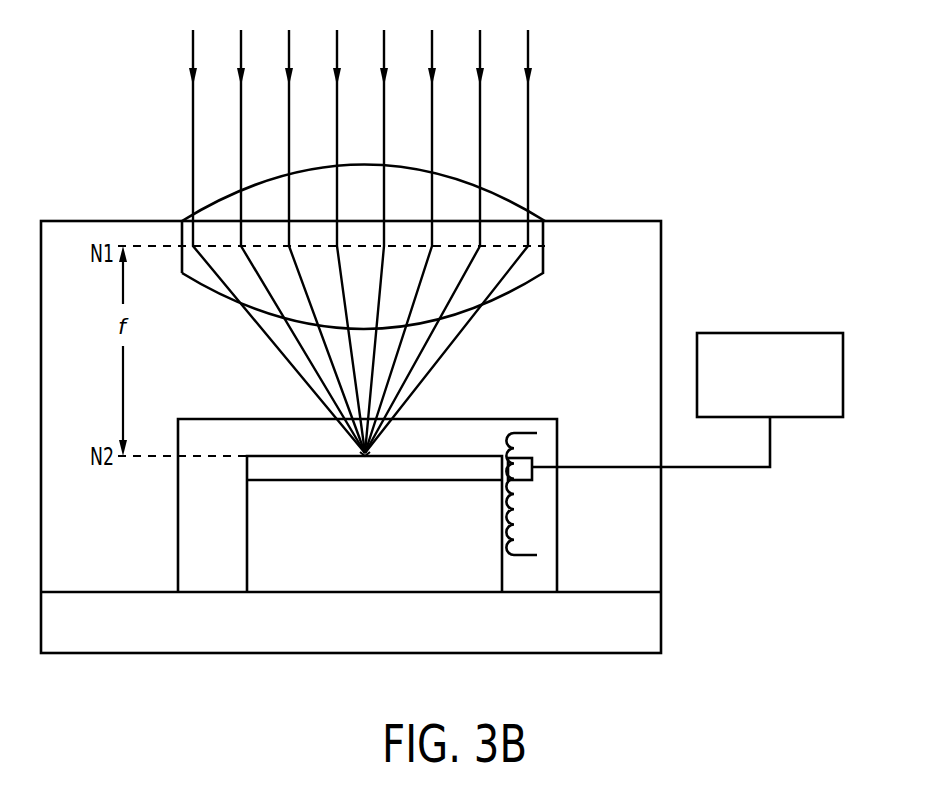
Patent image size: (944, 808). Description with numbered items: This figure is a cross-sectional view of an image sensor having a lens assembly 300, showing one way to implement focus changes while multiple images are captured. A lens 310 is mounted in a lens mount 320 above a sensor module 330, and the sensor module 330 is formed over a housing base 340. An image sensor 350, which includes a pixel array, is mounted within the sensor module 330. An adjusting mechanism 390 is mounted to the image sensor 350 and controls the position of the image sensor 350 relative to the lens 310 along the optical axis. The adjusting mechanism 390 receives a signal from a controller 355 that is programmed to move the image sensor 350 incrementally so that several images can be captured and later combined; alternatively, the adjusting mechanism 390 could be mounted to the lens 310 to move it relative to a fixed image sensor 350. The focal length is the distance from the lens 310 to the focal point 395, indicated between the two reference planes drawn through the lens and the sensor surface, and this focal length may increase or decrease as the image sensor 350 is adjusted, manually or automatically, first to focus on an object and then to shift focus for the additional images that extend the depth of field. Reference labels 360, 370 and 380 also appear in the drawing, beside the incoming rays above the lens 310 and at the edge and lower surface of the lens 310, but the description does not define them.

The lens assembly 300 is at (703, 262).
The lens 310 is at (545, 219).
The lens mount 320 is at (620, 221).
The sensor module 330 is at (560, 555).
The housing base 340 is at (645, 624).
The image sensor 350 is at (403, 463).
The controller 355 is at (770, 375).
The incident light rays 360 is at (530, 108).
The lens edge 370 is at (185, 220).
The lens lower surface 380 is at (215, 293).
The adjusting mechanism 390 is at (533, 463).
The focal point 395 is at (330, 424).